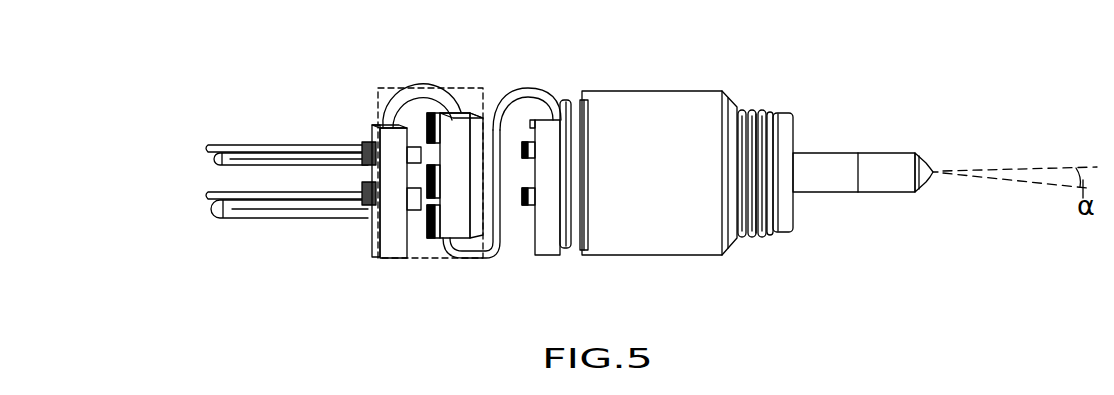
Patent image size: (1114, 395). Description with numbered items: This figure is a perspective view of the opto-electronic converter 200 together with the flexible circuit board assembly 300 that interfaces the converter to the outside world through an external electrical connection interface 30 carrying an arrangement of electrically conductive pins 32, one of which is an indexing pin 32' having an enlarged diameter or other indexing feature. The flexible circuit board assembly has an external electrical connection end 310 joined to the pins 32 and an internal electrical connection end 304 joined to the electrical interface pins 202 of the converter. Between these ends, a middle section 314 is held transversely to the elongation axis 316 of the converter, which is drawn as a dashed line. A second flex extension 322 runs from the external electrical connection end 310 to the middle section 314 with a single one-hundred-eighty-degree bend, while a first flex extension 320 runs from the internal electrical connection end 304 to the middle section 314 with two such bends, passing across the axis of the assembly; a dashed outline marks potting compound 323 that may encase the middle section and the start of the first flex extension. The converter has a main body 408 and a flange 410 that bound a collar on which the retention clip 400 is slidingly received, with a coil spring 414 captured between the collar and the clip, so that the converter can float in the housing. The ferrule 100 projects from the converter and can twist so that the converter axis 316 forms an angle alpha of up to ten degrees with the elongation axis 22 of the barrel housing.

The external electrical connection interface 30 is at (273, 139).
The electrically conductive pins 32 is at (256, 177).
The indexing pin 32' is at (287, 257).
The flexible circuit board assembly 300 is at (447, 183).
The external electrical connection end 310 is at (370, 240).
The middle section 314 is at (445, 243).
The second flex extension 322 is at (393, 93).
The potting compound 323 is at (485, 88).
The first flex extension 320 is at (528, 90).
The electrical interface pins 202 is at (528, 201).
The internal electrical connection end 304 is at (567, 257).
The opto-electronic converter 200 is at (658, 164).
The main body 408 is at (700, 255).
The retention clip 400 is at (740, 108).
The coil spring 414 is at (760, 112).
The flange 410 is at (782, 113).
The ferrule 100 is at (863, 153).
The elongation axis of the converter 316 is at (1017, 168).
The elongation axis of the barrel housing 22 is at (1015, 182).